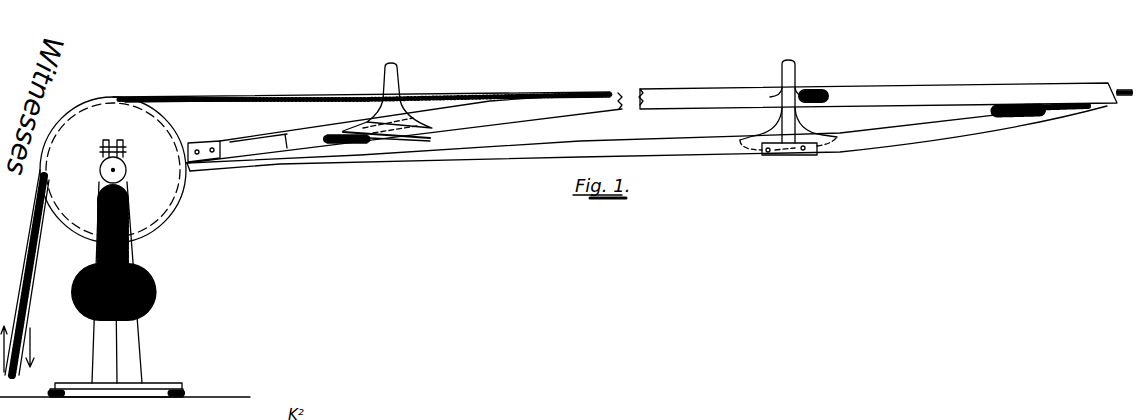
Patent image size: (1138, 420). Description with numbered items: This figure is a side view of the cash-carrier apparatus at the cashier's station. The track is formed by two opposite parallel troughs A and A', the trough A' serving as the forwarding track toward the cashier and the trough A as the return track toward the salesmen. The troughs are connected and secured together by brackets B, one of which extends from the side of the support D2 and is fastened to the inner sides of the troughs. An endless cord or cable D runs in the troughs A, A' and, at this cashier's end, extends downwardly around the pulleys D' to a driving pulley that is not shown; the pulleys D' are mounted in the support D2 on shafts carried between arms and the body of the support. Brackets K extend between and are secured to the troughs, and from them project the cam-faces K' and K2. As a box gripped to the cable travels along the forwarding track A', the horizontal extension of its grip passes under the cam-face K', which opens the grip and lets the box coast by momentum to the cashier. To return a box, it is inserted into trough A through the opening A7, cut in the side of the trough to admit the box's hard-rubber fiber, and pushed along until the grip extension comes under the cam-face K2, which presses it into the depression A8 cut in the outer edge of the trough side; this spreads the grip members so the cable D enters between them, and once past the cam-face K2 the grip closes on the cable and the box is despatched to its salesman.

The pulleys D' is at (113, 170).
The endless cord or cable D is at (566, 226).
The support D2 is at (135, 285).
The brackets B is at (188, 143).
The trough (return track) A is at (651, 131).
The trough (forwarding track) A' is at (647, 137).
The opening A7 is at (257, 142).
The depression A8 is at (317, 147).
The brackets K is at (590, 93).
The cam-face K' is at (800, 126).
The cam-face K2 is at (422, 139).